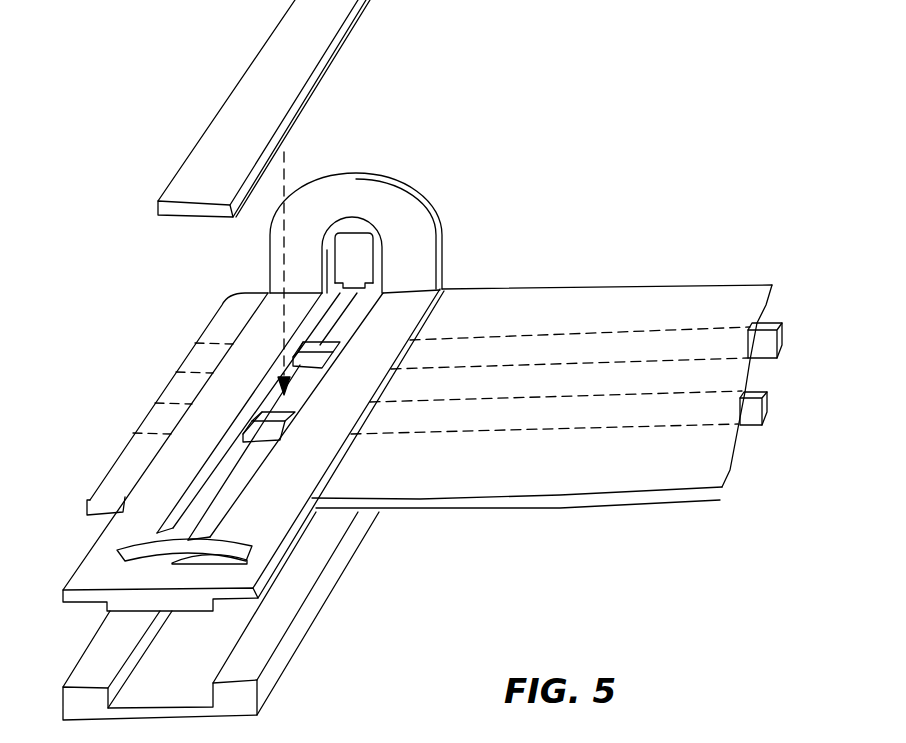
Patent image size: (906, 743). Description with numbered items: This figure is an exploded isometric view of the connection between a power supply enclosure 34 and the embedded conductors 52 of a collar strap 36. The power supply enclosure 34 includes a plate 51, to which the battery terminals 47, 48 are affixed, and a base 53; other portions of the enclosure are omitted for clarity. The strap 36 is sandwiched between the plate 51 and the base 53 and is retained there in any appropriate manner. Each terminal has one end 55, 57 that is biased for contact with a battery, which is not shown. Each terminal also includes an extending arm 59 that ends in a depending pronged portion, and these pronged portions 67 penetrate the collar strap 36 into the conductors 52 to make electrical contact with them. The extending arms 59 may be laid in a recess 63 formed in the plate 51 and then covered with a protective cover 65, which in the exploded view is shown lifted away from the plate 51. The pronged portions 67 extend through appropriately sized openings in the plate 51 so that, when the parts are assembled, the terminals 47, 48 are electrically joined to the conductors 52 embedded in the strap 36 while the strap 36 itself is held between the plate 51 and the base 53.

The power supply enclosure 34 is at (397, 150).
The strap 36 is at (584, 481).
The battery terminal 47 is at (363, 247).
The battery terminal 48 is at (207, 559).
The plate 51 is at (265, 527).
The embedded conductors 52 is at (777, 342).
The base 53 is at (292, 646).
The terminal end 55 is at (360, 275).
The terminal end 57 is at (117, 552).
The extending arm 59 is at (337, 322).
The recess 63 is at (282, 403).
The protective cover 65 is at (257, 103).
The pronged portions 67 is at (347, 362).